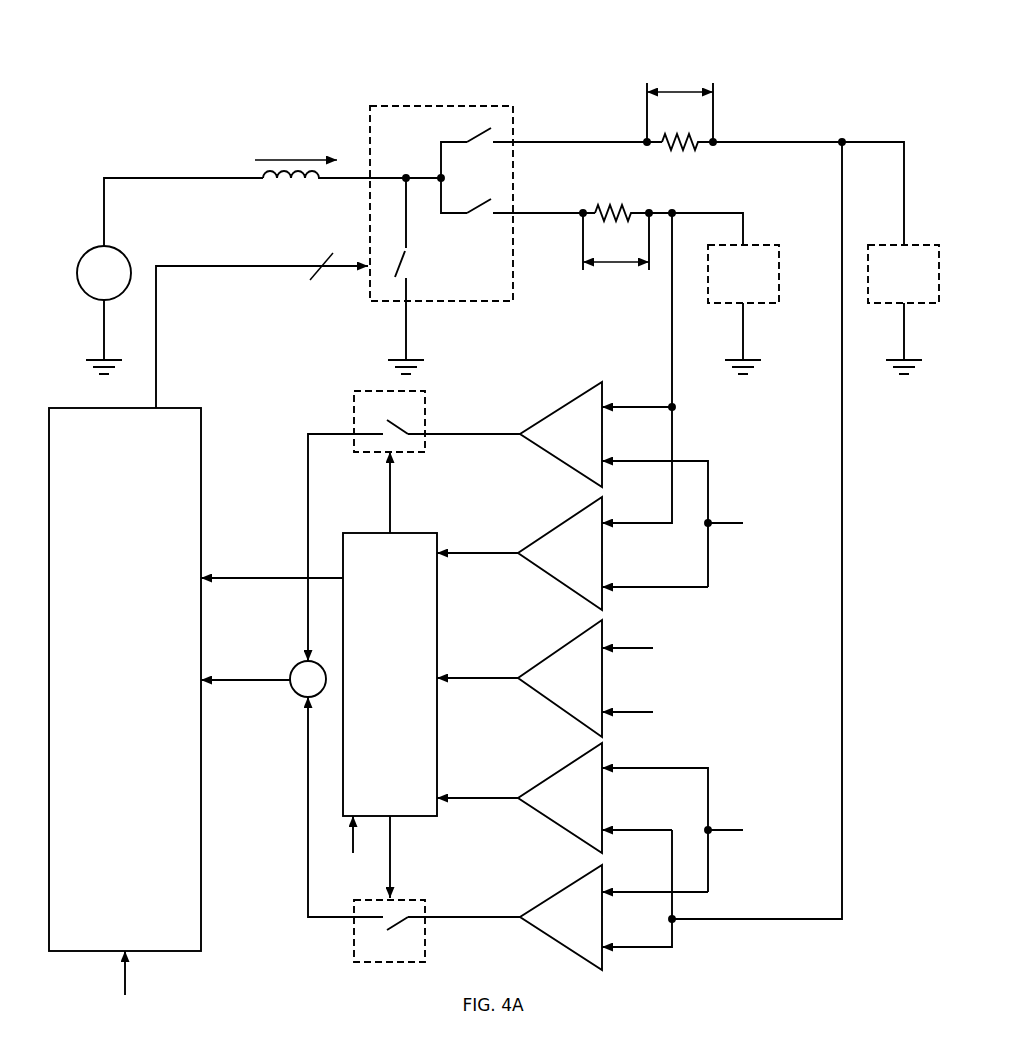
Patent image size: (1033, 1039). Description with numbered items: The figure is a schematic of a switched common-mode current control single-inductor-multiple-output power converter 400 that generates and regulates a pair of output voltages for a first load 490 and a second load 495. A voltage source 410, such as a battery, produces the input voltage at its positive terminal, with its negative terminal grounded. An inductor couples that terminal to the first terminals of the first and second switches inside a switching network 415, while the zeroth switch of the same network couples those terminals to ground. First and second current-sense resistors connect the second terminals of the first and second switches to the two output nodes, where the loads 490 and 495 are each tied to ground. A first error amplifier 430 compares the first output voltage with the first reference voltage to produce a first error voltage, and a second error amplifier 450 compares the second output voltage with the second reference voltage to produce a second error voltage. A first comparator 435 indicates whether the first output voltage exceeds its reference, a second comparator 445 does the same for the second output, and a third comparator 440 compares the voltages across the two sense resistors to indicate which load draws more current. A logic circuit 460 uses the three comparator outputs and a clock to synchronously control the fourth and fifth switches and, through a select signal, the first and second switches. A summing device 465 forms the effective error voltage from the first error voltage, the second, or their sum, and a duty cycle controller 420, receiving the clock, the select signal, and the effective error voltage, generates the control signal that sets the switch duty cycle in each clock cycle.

The power converter 400 is at (520, 62).
The voltage source 410 is at (102, 247).
The switching network 415 is at (427, 103).
The duty cycle controller 420 is at (109, 719).
The first error amplifier 430 is at (577, 395).
The first comparator 435 is at (577, 512).
The third comparator 440 is at (577, 637).
The second comparator 445 is at (577, 759).
The second error amplifier 450 is at (577, 881).
The logic circuit 460 is at (374, 711).
The summing device 465 is at (293, 689).
The first load 490 is at (727, 297).
The second load 495 is at (887, 297).